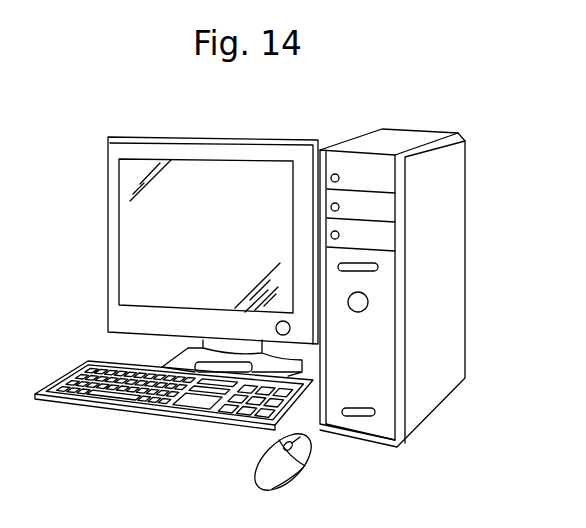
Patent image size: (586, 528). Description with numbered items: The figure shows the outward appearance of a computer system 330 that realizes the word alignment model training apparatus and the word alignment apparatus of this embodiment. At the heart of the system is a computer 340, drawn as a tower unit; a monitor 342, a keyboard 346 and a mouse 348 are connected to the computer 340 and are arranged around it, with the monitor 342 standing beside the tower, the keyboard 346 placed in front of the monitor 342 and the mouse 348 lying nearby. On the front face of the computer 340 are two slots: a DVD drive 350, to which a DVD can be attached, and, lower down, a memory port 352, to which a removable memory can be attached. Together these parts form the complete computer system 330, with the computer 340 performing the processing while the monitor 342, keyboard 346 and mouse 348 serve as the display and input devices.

The computer system 330 is at (503, 84).
The computer 340 is at (466, 140).
The monitor 342 is at (259, 138).
The keyboard 346 is at (123, 410).
The mouse 348 is at (290, 476).
The DVD drive 350 is at (375, 270).
The memory port 352 is at (360, 416).